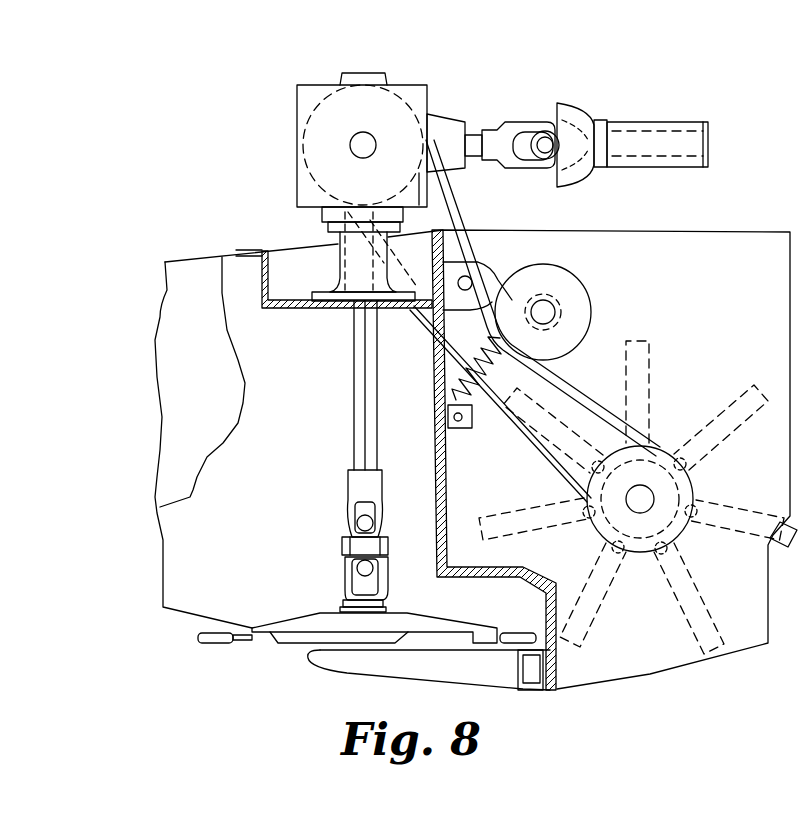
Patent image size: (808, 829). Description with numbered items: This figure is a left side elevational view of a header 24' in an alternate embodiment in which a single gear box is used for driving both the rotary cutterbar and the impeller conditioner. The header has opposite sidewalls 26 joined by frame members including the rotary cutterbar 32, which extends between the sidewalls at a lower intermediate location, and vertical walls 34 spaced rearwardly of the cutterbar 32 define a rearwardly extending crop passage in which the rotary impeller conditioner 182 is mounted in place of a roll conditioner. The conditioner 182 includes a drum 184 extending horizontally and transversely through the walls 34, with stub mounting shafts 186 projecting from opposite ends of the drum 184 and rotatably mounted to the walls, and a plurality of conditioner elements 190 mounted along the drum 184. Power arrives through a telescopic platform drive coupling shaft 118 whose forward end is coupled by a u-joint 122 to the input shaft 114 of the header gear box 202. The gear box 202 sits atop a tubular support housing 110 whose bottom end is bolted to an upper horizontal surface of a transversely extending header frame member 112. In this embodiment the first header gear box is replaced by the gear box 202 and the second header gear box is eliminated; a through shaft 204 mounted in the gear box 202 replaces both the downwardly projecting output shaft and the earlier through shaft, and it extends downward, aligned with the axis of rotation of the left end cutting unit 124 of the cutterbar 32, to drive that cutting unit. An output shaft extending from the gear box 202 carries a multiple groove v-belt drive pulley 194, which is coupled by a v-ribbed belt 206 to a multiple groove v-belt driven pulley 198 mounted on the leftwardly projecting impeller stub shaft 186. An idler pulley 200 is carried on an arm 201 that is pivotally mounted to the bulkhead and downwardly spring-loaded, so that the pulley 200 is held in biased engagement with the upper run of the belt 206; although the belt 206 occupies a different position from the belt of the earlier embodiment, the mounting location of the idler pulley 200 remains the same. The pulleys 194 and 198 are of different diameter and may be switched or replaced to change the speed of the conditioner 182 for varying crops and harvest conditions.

The header 24' is at (748, 195).
The sidewalls 26 is at (206, 379).
The rotary cutterbar 32 is at (296, 676).
The vertical walls 34 is at (768, 277).
The tubular support housing 110 is at (338, 263).
The header frame member 112 is at (294, 310).
The input shaft 114 is at (475, 132).
The telescopic platform drive coupling shaft 118 is at (705, 124).
The u-joint 122 is at (532, 122).
The left end cutting unit 124 is at (271, 609).
The rotary impeller conditioner 182 is at (662, 382).
The drum 184 is at (700, 481).
The stub mounting shafts 186 is at (642, 500).
The conditioner elements 190 is at (686, 620).
The v-belt drive pulley 194 is at (411, 94).
The v-belt driven pulley 198 is at (604, 452).
The idler pulley 200 is at (588, 292).
The arm 201 is at (493, 268).
The header gear box 202 is at (306, 84).
The through shaft 204 is at (354, 412).
The v-ribbed belt 206 is at (452, 200).